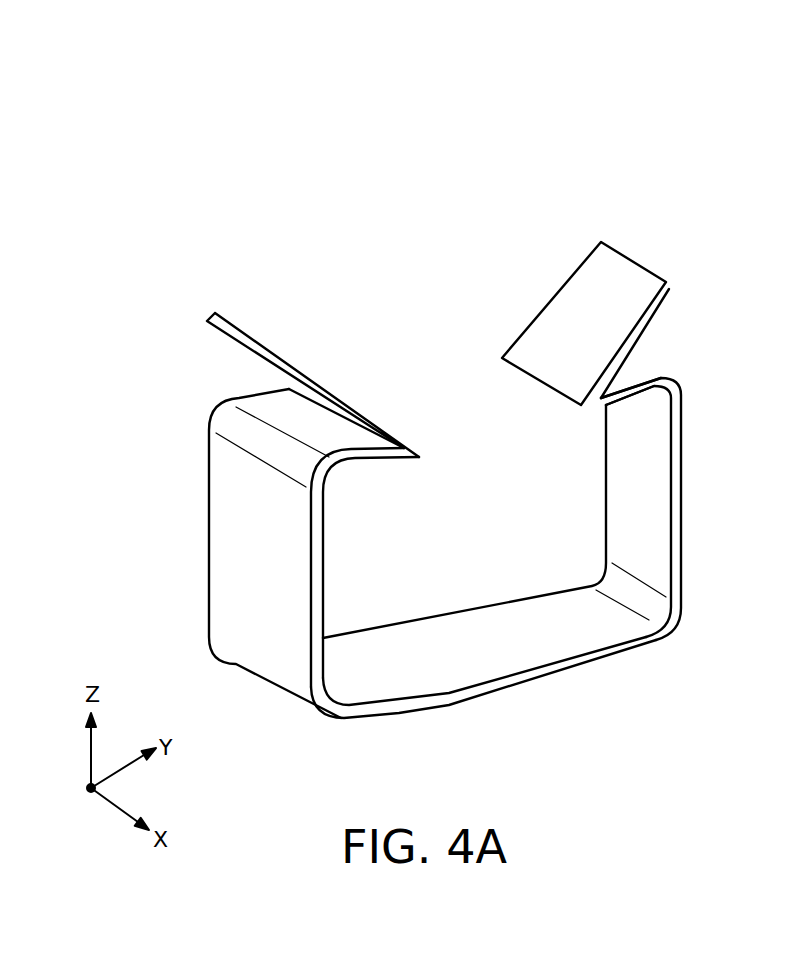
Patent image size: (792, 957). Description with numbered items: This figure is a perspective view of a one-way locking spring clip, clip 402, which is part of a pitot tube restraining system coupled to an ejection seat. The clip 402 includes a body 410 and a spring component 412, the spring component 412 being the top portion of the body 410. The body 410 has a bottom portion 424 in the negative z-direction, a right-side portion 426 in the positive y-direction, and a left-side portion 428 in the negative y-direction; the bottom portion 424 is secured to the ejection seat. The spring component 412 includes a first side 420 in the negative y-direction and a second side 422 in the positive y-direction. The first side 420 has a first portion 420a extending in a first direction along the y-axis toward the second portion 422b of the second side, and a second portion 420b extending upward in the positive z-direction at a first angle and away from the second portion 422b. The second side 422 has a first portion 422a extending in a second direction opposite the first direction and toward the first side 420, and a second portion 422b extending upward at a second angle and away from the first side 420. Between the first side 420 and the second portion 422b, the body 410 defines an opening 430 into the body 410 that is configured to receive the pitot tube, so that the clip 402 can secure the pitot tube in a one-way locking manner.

The one-way locking spring clip 402 is at (202, 214).
The spring component 412 is at (425, 214).
The body 410 is at (668, 681).
The first side 420 is at (267, 347).
The first portion 420a is at (252, 402).
The second portion 420b is at (336, 390).
The second side 422 is at (603, 270).
The first portion 422a is at (641, 368).
The second portion 422b is at (557, 318).
The bottom portion 424 is at (540, 673).
The right-side portion 426 is at (676, 479).
The left-side portion 428 is at (232, 585).
The opening 430 is at (480, 454).